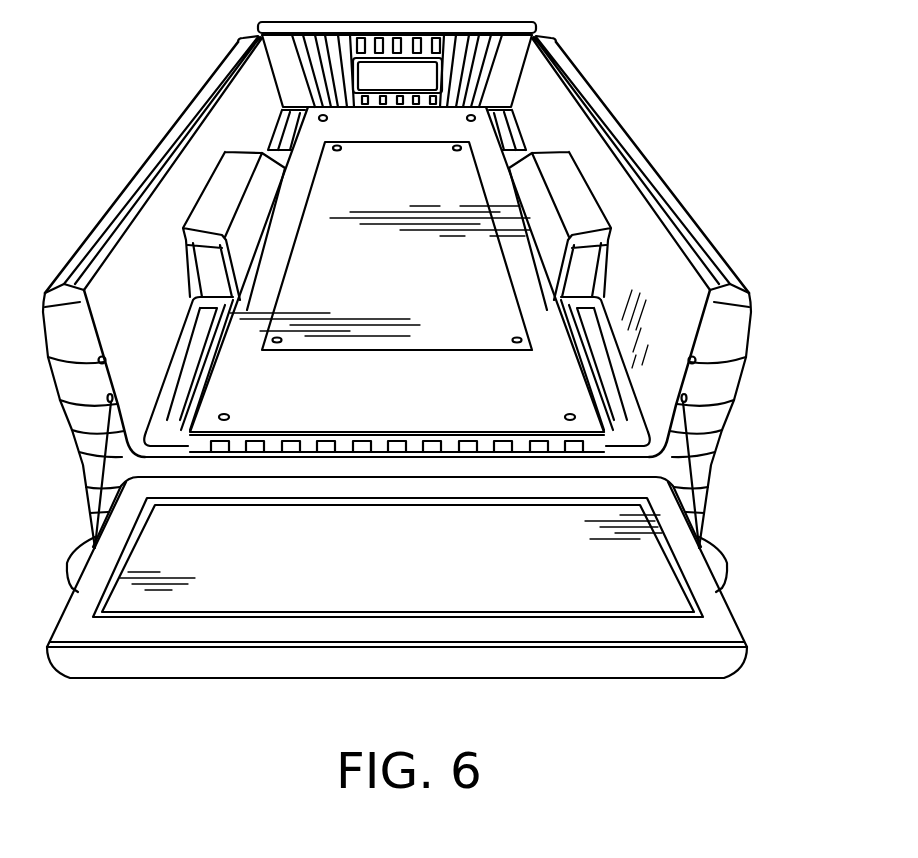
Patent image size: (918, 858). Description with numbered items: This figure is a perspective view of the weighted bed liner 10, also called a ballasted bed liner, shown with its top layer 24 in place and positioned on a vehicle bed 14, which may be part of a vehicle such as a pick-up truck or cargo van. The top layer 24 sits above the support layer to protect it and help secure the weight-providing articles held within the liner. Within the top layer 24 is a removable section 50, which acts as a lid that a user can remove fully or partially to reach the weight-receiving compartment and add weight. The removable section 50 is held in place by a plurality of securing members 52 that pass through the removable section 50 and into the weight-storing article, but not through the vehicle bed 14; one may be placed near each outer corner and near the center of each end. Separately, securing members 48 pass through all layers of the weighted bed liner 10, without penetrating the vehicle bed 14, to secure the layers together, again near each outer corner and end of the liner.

The weighted bed liner 10 is at (303, 143).
The vehicle bed 14 is at (513, 68).
The top layer 24 is at (490, 177).
The securing member 48 is at (570, 415).
The removable section 50 is at (313, 288).
The securing member 52 is at (517, 340).